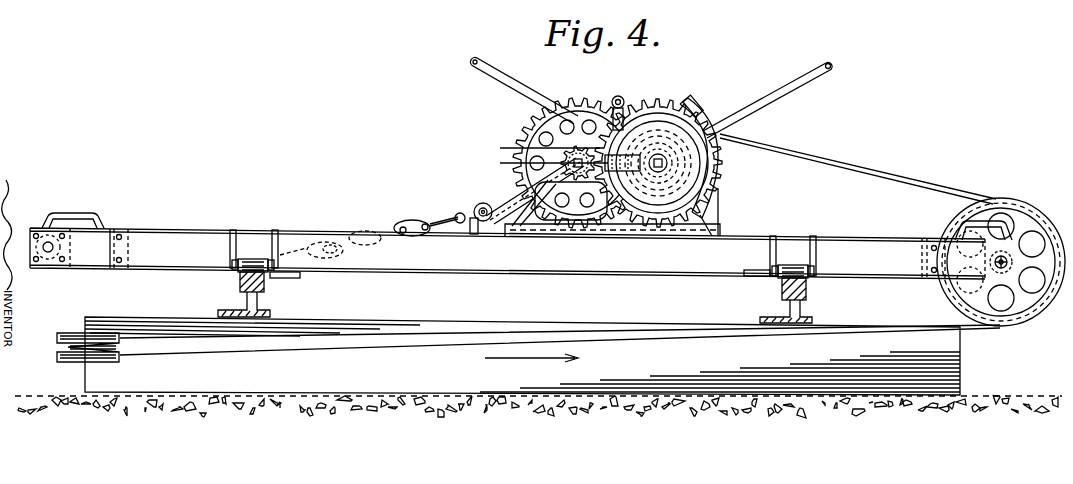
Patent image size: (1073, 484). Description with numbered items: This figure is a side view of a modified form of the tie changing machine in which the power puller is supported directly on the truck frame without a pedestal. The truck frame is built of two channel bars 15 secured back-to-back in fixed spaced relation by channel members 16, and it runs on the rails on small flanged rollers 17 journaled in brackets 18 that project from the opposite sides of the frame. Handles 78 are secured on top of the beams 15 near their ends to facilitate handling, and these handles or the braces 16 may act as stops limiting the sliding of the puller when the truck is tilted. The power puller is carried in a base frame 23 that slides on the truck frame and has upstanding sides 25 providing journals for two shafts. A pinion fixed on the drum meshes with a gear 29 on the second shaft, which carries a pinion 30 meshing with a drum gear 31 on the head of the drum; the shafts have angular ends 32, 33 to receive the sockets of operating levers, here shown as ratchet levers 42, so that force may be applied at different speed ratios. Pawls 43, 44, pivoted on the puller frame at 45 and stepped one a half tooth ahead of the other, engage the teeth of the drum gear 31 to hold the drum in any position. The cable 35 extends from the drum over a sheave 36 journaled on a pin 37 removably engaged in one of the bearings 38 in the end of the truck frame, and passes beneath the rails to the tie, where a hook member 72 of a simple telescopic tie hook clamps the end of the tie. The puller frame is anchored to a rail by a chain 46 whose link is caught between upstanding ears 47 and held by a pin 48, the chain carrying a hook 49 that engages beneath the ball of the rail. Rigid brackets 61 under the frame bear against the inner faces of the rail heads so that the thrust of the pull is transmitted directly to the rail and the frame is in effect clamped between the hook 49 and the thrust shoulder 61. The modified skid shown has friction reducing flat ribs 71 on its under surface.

The channel bars 15 is at (182, 240).
The channel members 16 is at (128, 230).
The flanged rollers 17 is at (256, 260).
The brackets 18 is at (236, 240).
The base frame 23 is at (722, 232).
The upstanding sides 25 is at (516, 202).
The gear 29 is at (520, 130).
The pinion 30 is at (548, 148).
The drum gear 31 is at (714, 190).
The shaft end 32 is at (666, 165).
The shaft end 33 is at (566, 163).
The cable 35 is at (886, 172).
The sheave 36 is at (1026, 206).
The pin 37 is at (1010, 257).
The bearings 38 is at (1004, 272).
The ratchet levers 42 is at (478, 68).
The pawl 43 is at (700, 108).
The pawl 44 is at (686, 98).
The pivot 45 is at (617, 96).
The chain 46 is at (370, 230).
The upstanding ears 47 is at (456, 217).
The pin 48 is at (478, 206).
The hook 49 is at (238, 285).
The brackets 61 is at (292, 278).
The flat ribs 71 is at (240, 318).
The hook member 72 is at (96, 338).
The handles 78 is at (80, 212).